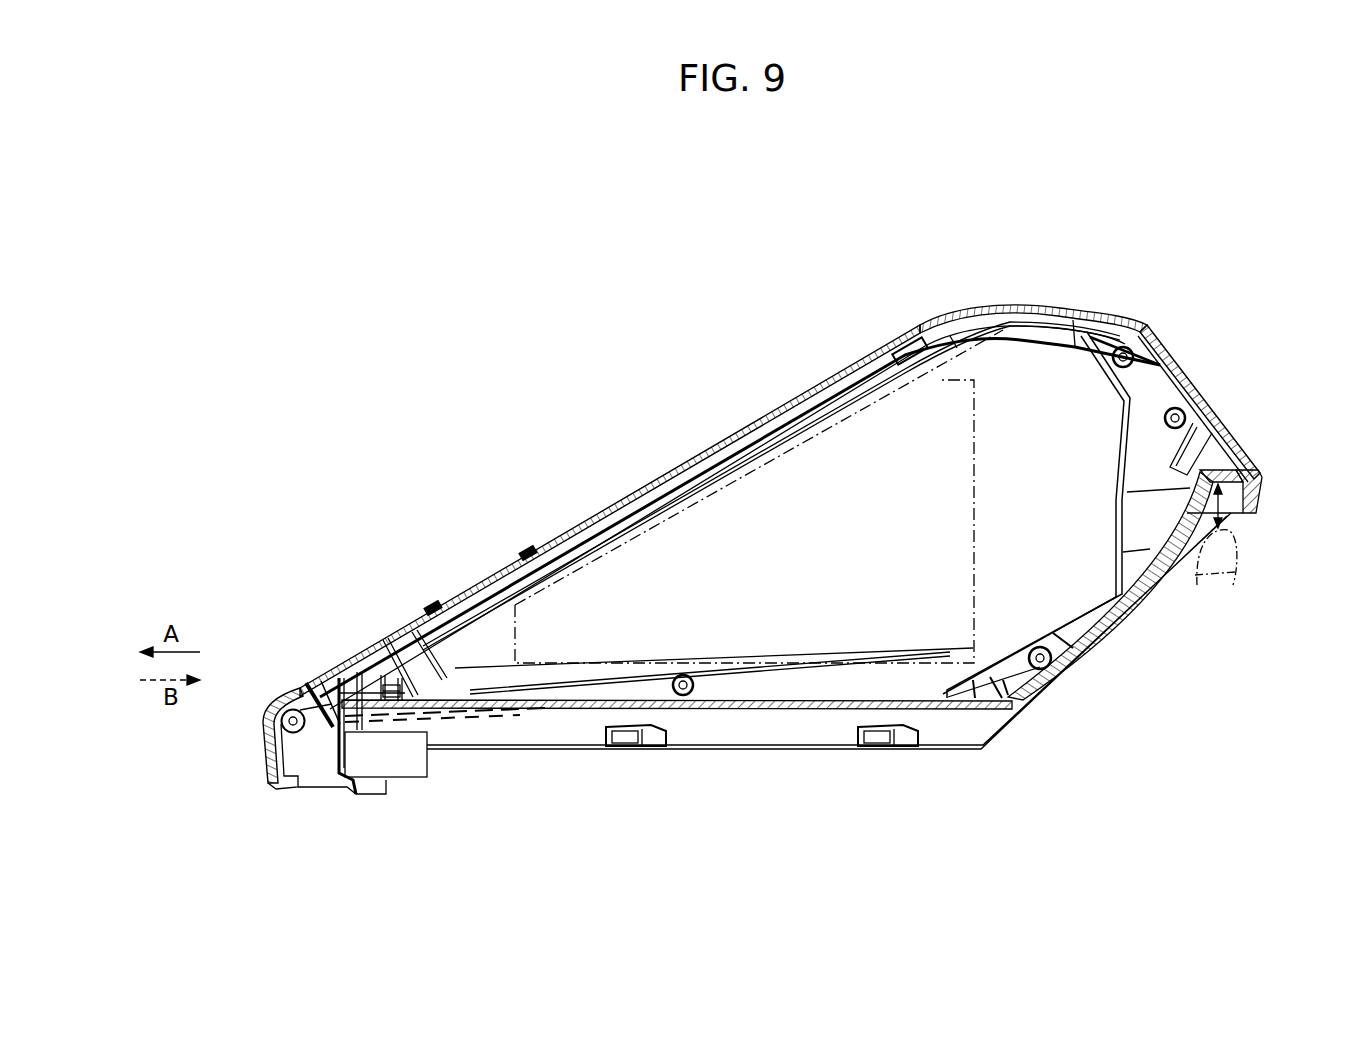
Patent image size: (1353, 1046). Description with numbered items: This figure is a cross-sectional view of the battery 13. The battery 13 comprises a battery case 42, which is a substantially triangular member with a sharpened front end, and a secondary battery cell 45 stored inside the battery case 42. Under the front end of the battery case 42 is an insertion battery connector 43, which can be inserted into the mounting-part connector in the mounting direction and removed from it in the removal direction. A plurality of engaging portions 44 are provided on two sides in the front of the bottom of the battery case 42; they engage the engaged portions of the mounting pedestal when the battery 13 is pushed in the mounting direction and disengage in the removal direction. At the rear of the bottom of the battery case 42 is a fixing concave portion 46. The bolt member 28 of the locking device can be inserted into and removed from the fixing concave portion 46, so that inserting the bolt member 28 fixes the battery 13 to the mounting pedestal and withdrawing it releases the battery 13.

The battery 13 is at (684, 456).
The bolt member 28 is at (1232, 560).
The battery case 42 is at (570, 525).
The battery connector 43 is at (418, 762).
The engaging portions 44 is at (607, 727).
The secondary battery cell 45 is at (1022, 312).
The fixing concave portion 46 is at (1232, 504).